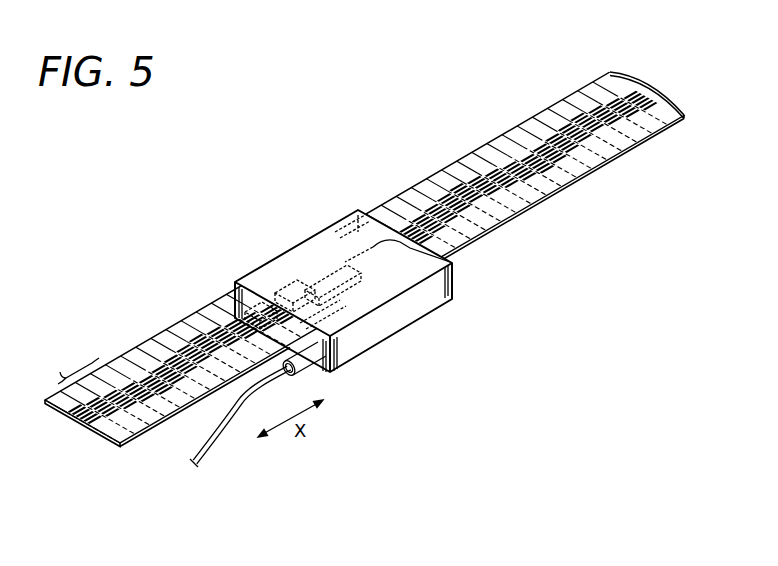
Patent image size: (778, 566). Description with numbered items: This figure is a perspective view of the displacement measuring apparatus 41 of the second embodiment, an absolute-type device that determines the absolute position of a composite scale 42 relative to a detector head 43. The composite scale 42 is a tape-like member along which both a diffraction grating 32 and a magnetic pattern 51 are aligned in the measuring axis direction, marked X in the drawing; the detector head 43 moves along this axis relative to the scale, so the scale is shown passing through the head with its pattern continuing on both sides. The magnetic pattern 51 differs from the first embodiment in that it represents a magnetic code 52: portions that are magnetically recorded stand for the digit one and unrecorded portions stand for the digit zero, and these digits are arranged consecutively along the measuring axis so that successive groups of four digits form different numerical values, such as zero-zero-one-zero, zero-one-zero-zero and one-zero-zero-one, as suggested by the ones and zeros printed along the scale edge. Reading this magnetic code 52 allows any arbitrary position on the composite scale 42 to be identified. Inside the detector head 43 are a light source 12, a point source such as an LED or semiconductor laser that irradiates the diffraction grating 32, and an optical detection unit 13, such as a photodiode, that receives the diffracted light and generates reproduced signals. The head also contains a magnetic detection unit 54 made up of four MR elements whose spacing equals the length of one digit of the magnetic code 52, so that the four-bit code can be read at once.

The light source 12 is at (284, 292).
The optical detection unit 13 is at (250, 295).
The diffraction grating 32 is at (138, 412).
The displacement measuring apparatus 41 is at (546, 78).
The composite scale 42 is at (387, 202).
The detector head 43 is at (388, 330).
The magnetic pattern 51 is at (146, 324).
The magnetic code 52 is at (60, 372).
The magnetic detection unit 54 is at (452, 270).